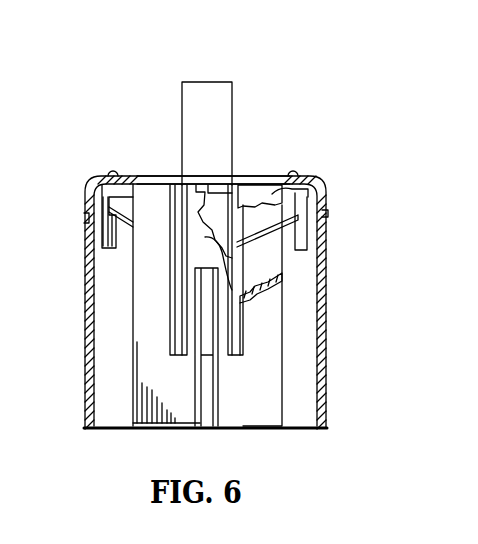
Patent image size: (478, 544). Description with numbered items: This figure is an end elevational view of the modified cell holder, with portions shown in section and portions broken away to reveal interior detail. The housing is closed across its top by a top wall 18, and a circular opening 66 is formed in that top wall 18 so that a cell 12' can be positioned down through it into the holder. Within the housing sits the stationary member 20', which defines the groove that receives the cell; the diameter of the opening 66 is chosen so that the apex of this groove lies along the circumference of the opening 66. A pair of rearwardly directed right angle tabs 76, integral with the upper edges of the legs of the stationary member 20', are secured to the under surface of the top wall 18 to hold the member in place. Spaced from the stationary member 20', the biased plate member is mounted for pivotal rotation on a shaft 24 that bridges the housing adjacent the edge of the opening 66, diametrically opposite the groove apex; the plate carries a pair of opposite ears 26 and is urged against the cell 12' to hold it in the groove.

The stem / column 12' is at (227, 210).
The top wall 18 is at (108, 173).
The circular opening 66 is at (137, 177).
The right angle tabs 76 is at (309, 176).
The shaft 24 is at (84, 218).
The ears 26 is at (108, 251).
The stationary member 20' is at (304, 315).